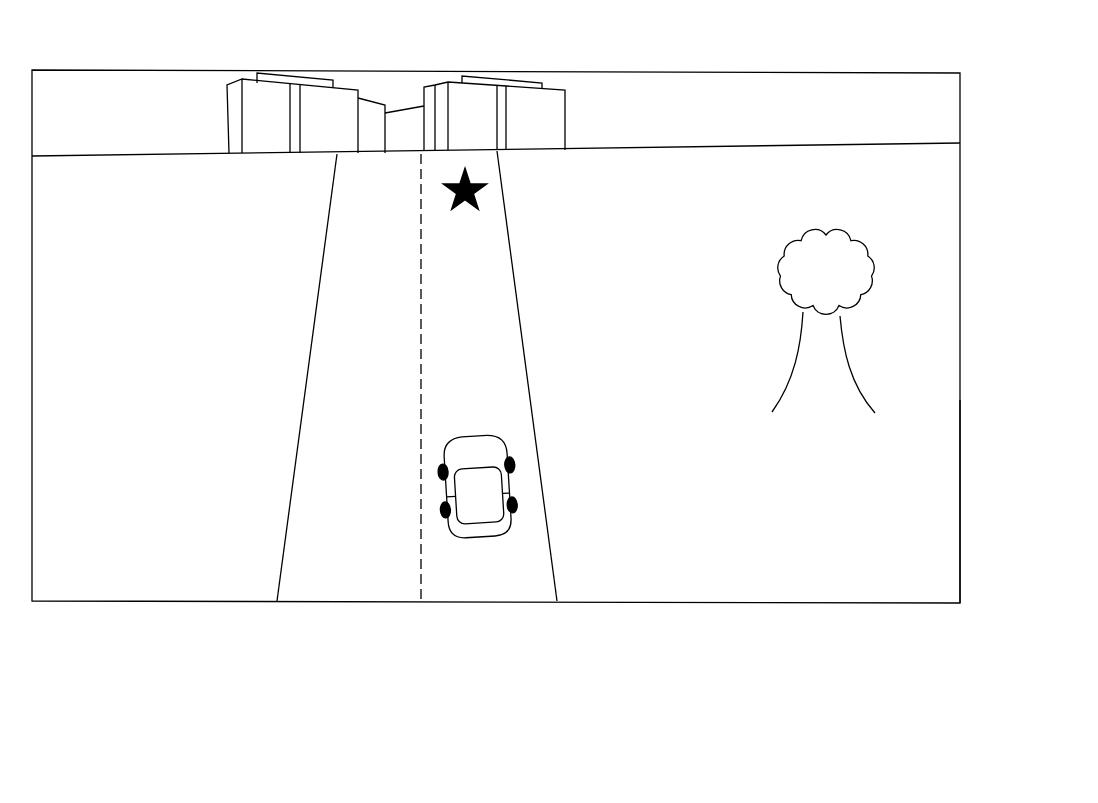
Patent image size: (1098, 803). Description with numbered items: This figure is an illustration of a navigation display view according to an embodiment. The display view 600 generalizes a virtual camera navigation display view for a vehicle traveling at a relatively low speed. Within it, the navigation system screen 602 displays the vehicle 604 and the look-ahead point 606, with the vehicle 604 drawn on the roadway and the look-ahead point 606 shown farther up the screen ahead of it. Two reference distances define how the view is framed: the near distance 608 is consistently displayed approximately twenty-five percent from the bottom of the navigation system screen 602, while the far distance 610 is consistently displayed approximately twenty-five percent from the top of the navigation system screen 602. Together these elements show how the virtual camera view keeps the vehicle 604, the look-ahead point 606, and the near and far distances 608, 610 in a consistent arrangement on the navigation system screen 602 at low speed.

The display view 600 is at (1080, 70).
The navigation system screen 602 is at (805, 73).
The vehicle 604 is at (514, 500).
The look-ahead point 606 is at (487, 185).
The near distance 608 is at (959, 497).
The far distance 610 is at (945, 230).